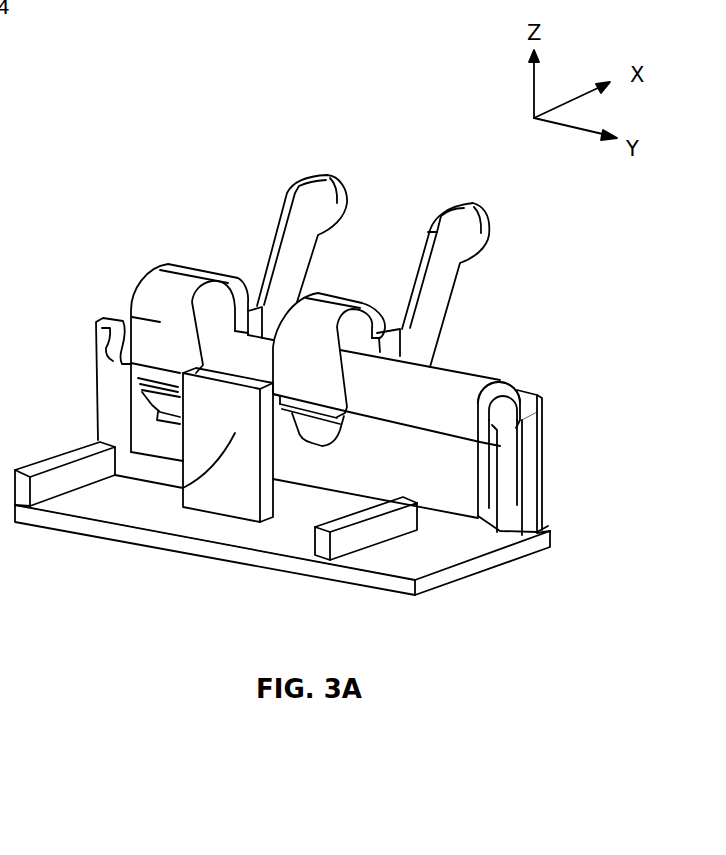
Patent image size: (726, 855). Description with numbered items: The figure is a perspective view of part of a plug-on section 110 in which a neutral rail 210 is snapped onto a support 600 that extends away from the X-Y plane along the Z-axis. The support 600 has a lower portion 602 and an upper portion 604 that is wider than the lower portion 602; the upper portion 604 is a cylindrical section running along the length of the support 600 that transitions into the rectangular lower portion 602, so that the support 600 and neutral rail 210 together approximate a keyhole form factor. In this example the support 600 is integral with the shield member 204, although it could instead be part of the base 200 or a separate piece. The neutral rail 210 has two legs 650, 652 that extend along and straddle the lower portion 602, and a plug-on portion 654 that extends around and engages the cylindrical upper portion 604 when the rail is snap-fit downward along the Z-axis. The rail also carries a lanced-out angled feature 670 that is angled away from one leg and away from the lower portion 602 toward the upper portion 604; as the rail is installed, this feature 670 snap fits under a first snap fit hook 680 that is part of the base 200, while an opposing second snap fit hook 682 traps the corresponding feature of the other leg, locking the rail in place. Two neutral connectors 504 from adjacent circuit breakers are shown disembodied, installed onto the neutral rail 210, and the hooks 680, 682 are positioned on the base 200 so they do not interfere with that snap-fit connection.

The plug-on section 110 is at (577, 251).
The base 200 is at (128, 515).
The shield member 204 is at (106, 412).
The neutral rail 210 is at (440, 373).
The neutral connectors 504 is at (337, 193).
The support 600 is at (443, 523).
The lower portion 602 is at (508, 523).
The upper portion 604 is at (503, 413).
The leg 650 is at (350, 478).
The leg 652 is at (517, 455).
The plug-on portion 654 is at (499, 383).
The angled feature 670 is at (277, 466).
The first snap fit hook 680 is at (183, 488).
The second snap fit hook 682 is at (537, 488).